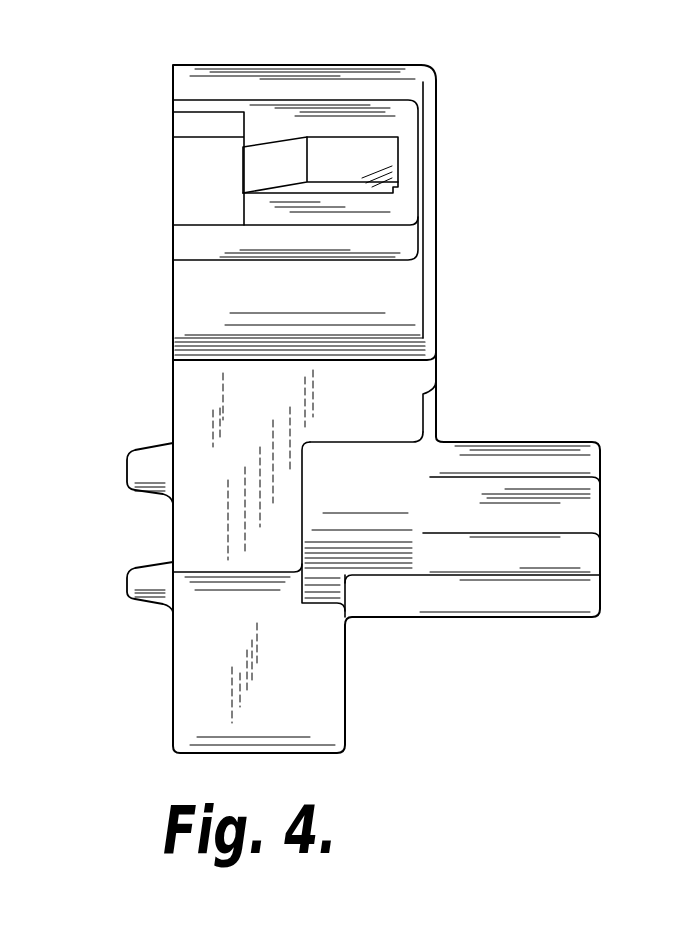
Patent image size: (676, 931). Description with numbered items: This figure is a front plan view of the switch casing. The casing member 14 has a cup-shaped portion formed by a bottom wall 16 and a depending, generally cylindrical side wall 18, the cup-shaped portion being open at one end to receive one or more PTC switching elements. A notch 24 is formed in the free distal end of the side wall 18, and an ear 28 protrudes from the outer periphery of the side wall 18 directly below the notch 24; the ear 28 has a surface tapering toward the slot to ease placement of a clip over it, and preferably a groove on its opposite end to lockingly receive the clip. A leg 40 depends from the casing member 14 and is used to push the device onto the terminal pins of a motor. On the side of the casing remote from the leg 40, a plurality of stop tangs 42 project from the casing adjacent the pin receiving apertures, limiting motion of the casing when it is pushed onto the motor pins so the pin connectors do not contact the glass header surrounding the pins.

The casing member 14 is at (440, 82).
The bottom wall 16 is at (438, 298).
The side wall 18 is at (302, 81).
The notch 24 is at (196, 126).
The ear 28 is at (386, 156).
The leg 40 is at (580, 523).
The stop tangs 42 is at (134, 478).